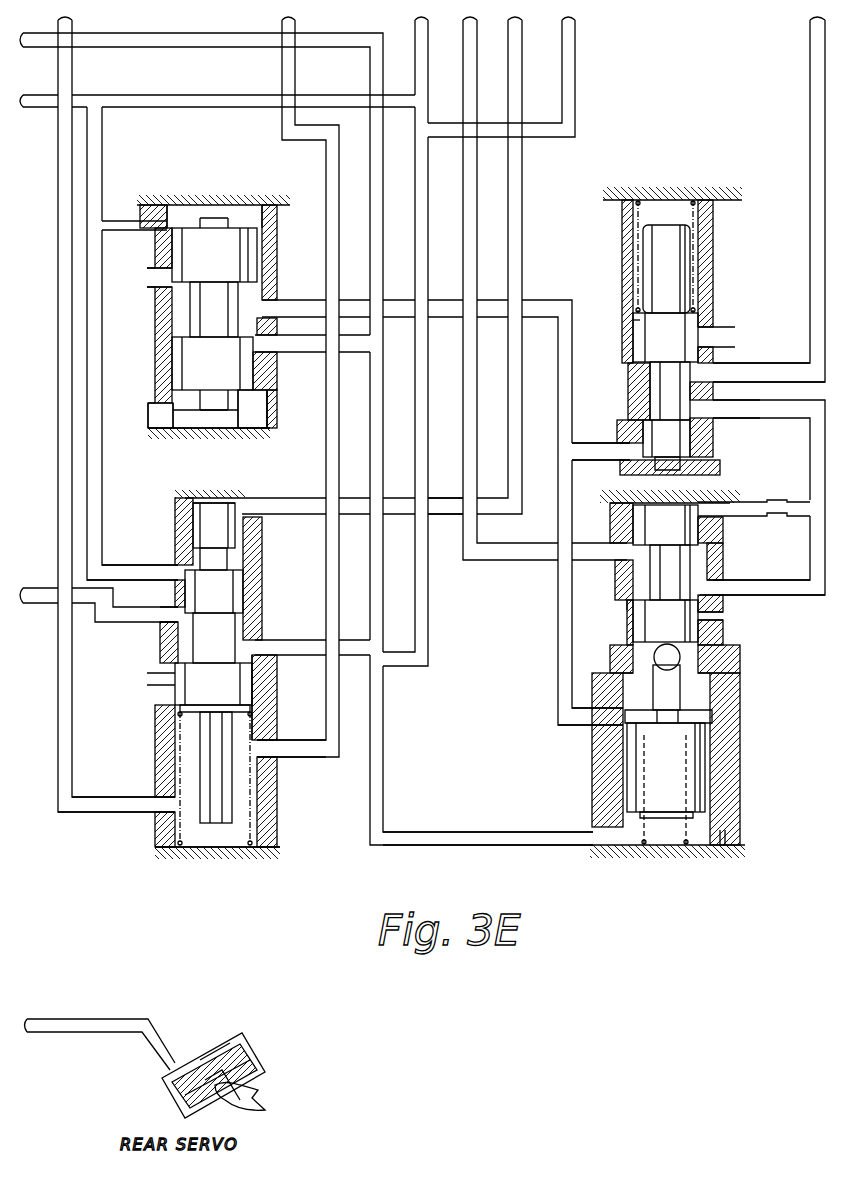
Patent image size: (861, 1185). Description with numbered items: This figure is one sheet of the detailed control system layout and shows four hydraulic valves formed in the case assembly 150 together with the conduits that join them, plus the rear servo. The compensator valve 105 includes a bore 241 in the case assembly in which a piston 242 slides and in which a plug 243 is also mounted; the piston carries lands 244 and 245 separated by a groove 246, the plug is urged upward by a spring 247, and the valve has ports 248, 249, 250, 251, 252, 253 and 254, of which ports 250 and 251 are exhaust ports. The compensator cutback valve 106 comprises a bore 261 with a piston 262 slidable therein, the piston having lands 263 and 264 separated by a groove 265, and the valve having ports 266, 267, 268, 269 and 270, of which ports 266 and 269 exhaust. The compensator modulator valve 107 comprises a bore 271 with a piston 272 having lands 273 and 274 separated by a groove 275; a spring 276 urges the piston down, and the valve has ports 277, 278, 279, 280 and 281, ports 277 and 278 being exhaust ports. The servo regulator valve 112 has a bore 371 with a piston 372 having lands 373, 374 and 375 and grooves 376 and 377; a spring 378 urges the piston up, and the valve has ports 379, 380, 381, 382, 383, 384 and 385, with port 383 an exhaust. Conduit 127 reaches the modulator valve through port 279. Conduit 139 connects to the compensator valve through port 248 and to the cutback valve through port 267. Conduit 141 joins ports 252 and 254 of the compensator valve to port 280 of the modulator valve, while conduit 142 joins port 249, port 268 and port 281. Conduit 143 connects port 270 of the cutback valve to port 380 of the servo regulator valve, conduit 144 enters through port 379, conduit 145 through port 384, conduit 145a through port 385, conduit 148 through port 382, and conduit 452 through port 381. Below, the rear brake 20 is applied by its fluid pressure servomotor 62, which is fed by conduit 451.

The conduit 139 is at (110, 47).
The conduit 145 is at (282, 60).
The conduit 145a is at (100, 812).
The conduit 143 is at (93, 433).
The conduit 148 is at (420, 660).
The conduit 144 is at (447, 515).
The conduit 127 is at (810, 65).
The conduit 141 is at (817, 455).
The conduit 142 is at (575, 710).
The case assembly 150 is at (218, 435).
The compensator cutback valve 106 is at (208, 301).
The compensator modulator valve 107 is at (674, 305).
The compensator valve 105 is at (648, 699).
The servo regulator valve 112 is at (212, 716).
The bore 261 is at (250, 405).
The piston 262 is at (188, 408).
The land 263 is at (188, 372).
The land 264 is at (240, 248).
The groove 265 is at (190, 307).
The port 266 is at (160, 420).
The port 267 is at (282, 352).
The port 268 is at (268, 300).
The port 269 is at (155, 277).
The port 270 is at (165, 228).
The bore 271 is at (635, 215).
The piston 272 is at (624, 323).
The land 273 is at (645, 340).
The land 274 is at (655, 430).
The groove 275 is at (648, 392).
The spring 276 is at (692, 215).
The port 277 is at (705, 203).
The port 278 is at (715, 337).
The port 279 is at (718, 373).
The port 280 is at (715, 410).
The port 281 is at (618, 452).
The bore 241 is at (650, 660).
The piston 242 is at (618, 608).
The plug 243 is at (705, 762).
The land 244 is at (645, 522).
The land 245 is at (633, 618).
The groove 246 is at (690, 580).
The spring 247 is at (715, 832).
The port 248 is at (590, 838).
The port 249 is at (585, 725).
The port 250 is at (710, 670).
The port 251 is at (725, 622).
The port 252 is at (715, 585).
The port 253 is at (627, 552).
The port 254 is at (730, 510).
The bore 371 is at (190, 738).
The piston 372 is at (182, 533).
The land 373 is at (205, 543).
The land 374 is at (230, 595).
The land 375 is at (262, 700).
The groove 376 is at (228, 560).
The groove 377 is at (245, 632).
The spring 378 is at (258, 845).
The port 379 is at (250, 498).
The port 380 is at (172, 572).
The port 381 is at (170, 625).
The port 382 is at (285, 655).
The port 383 is at (160, 680).
The port 384 is at (300, 757).
The port 385 is at (160, 797).
The conduit 451 is at (88, 1032).
The conduit 452 is at (85, 600).
The fluid pressure servomotor 62 is at (250, 1048).
The rear brake 20 is at (268, 1095).